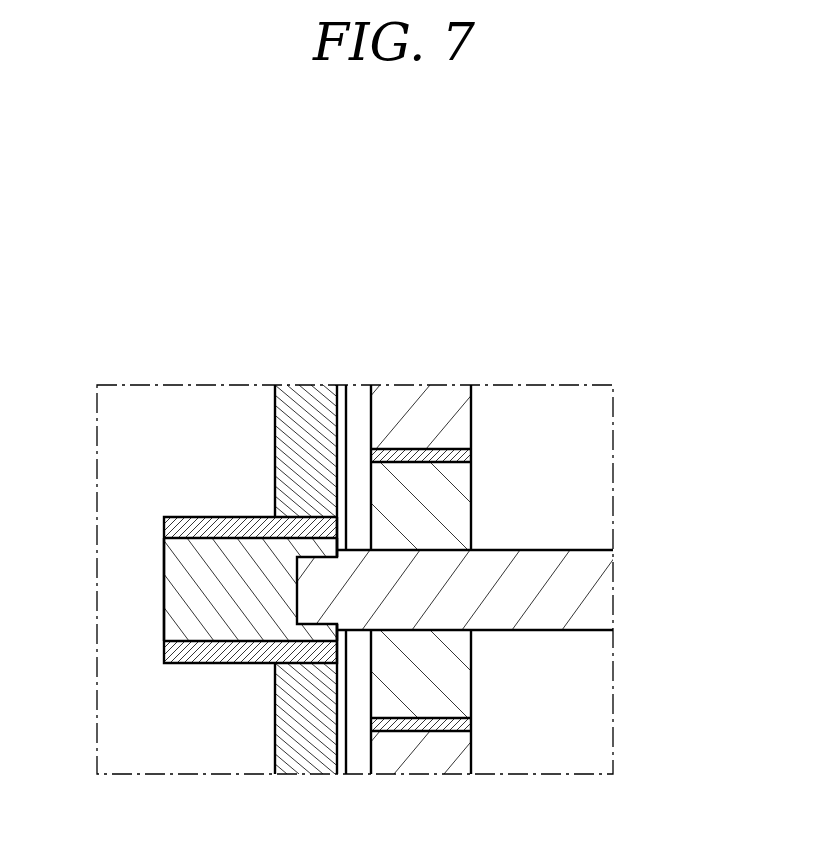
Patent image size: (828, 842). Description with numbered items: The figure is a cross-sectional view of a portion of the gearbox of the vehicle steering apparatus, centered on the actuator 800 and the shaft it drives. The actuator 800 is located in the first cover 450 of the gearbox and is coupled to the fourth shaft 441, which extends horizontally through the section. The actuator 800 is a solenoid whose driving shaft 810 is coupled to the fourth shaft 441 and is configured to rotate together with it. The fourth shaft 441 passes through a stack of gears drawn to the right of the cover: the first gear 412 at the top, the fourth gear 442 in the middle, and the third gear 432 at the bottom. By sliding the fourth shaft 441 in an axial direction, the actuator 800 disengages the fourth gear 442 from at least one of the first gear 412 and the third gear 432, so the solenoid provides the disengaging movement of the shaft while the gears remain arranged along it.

The actuator 800 is at (228, 554).
The driving shaft 810 is at (178, 587).
The first cover 450 is at (310, 395).
The first gear 412 is at (440, 398).
The fourth shaft 441 is at (590, 591).
The fourth gear 442 is at (452, 677).
The third gear 432 is at (437, 757).